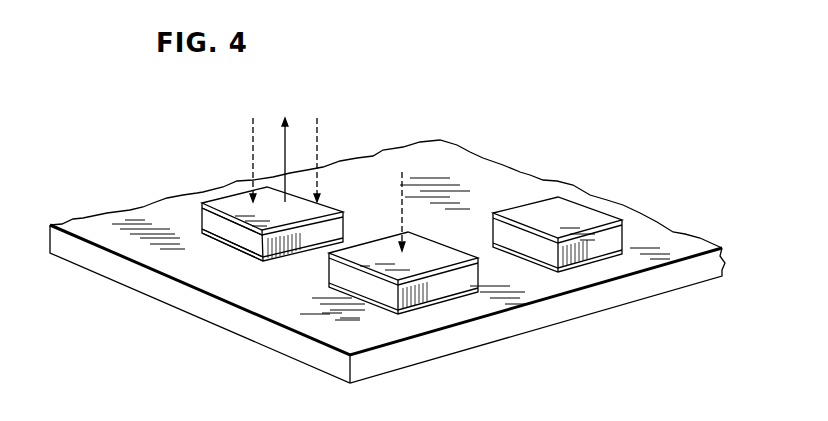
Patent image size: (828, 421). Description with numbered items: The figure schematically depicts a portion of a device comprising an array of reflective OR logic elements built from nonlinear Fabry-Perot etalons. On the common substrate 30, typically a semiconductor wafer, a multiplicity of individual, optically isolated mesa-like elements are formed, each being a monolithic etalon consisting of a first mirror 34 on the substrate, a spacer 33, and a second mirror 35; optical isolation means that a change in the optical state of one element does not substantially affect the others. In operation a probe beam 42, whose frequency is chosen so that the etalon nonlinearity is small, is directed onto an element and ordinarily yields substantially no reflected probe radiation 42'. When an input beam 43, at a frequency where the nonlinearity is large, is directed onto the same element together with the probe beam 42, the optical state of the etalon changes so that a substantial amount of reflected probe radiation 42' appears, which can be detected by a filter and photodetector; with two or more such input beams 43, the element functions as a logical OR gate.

The substrate 30 is at (567, 307).
The spacer 33 is at (242, 238).
The first mirror 34 is at (255, 253).
The second mirror 35 is at (223, 222).
The probe beam 42 is at (374, 173).
The reflected probe radiation 42' is at (302, 148).
The input beam 43 is at (256, 124).